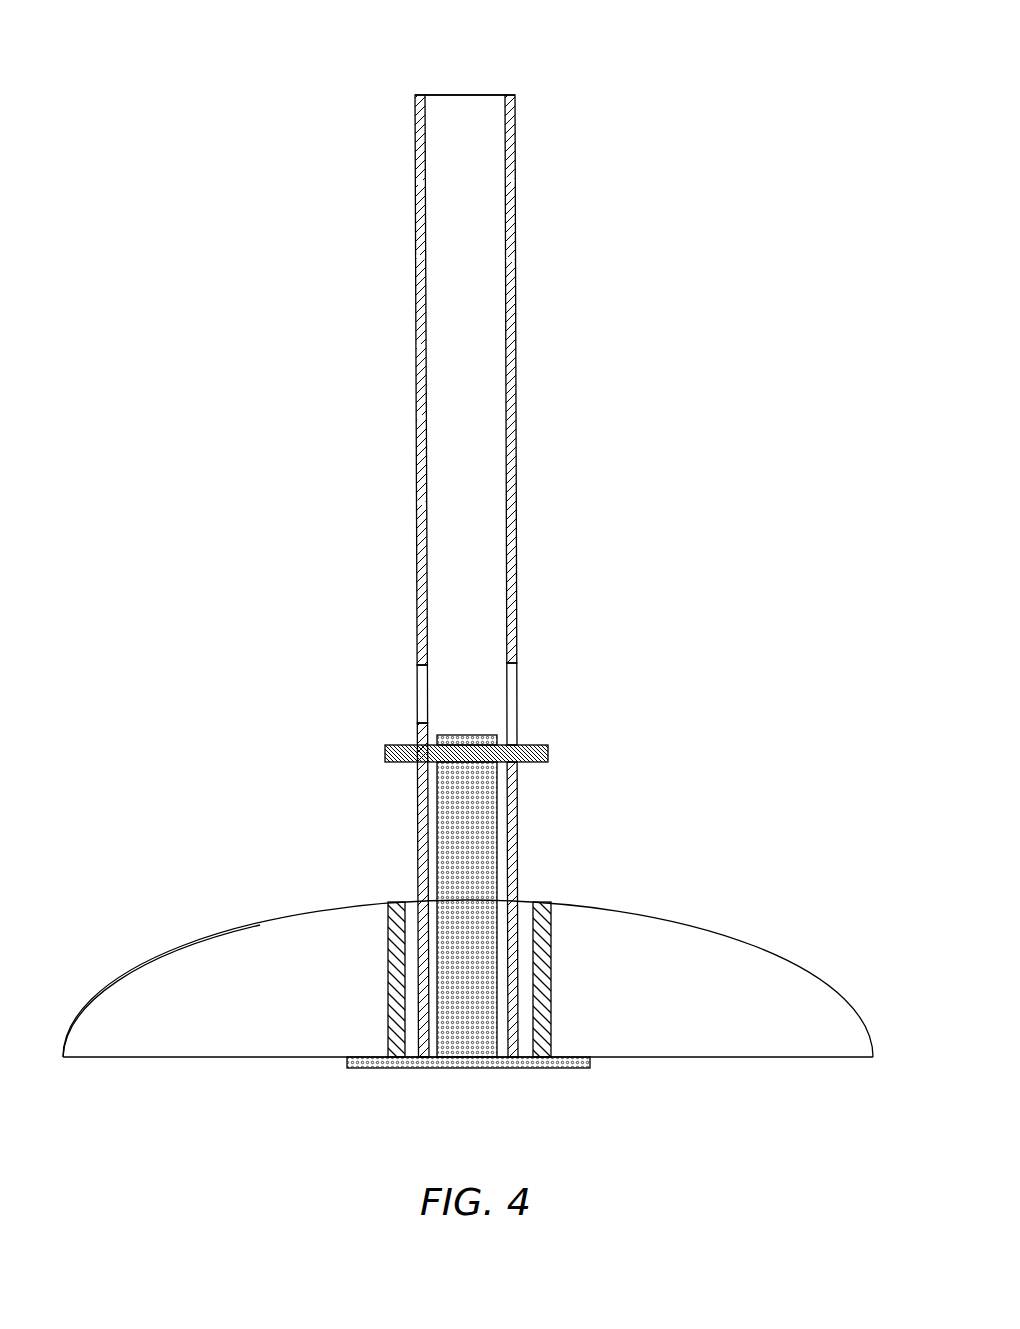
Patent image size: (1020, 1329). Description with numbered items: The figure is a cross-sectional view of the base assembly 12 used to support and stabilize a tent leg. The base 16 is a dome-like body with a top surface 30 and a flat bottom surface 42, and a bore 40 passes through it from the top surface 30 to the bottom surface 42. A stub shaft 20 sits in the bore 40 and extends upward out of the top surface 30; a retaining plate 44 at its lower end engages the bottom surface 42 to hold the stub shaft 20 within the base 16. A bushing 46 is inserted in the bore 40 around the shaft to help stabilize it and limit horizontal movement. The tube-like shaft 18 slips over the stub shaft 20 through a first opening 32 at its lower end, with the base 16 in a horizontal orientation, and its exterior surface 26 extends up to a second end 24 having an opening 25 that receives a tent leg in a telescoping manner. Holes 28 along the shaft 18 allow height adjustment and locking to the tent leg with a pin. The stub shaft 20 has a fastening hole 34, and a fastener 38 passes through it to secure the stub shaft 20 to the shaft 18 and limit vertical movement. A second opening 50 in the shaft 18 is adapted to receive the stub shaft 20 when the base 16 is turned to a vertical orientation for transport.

The base assembly 12 is at (173, 573).
The base 16 is at (777, 973).
The shaft 18 is at (441, 577).
The stub shaft 20 is at (478, 860).
The second end 24 is at (520, 97).
The opening 25 is at (445, 100).
The exterior surface 26 is at (515, 470).
The holes 28 is at (417, 418).
The top surface 30 is at (255, 923).
The first opening 32 is at (433, 1050).
The fastening hole 34 is at (492, 743).
The fastener 38 is at (393, 745).
The bore 40 is at (528, 900).
The bottom surface 42 is at (287, 1060).
The retaining plate 44 is at (533, 1067).
The bushing 46 is at (387, 900).
The second opening 50 is at (418, 675).